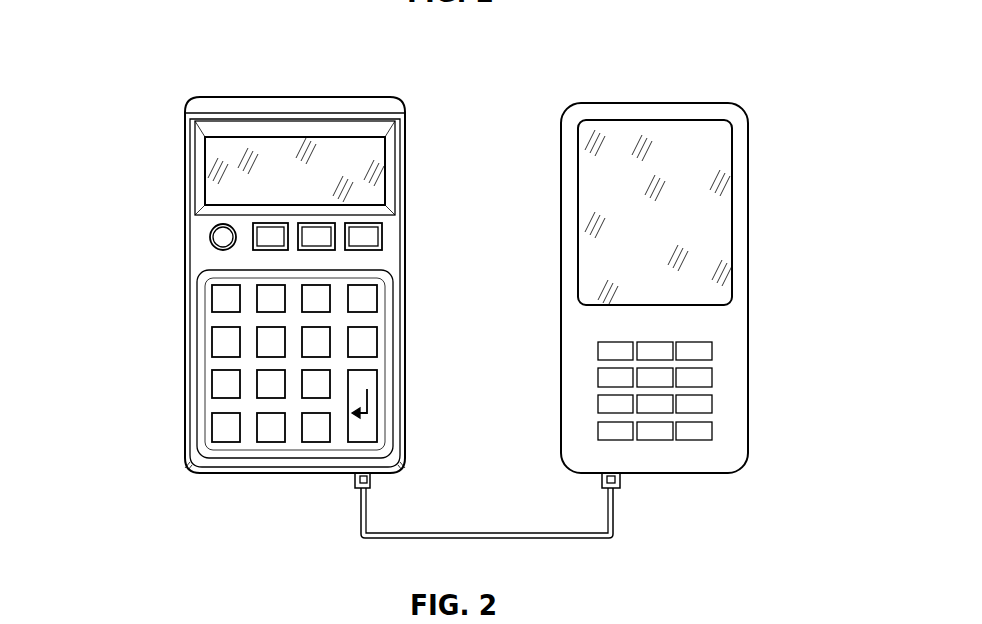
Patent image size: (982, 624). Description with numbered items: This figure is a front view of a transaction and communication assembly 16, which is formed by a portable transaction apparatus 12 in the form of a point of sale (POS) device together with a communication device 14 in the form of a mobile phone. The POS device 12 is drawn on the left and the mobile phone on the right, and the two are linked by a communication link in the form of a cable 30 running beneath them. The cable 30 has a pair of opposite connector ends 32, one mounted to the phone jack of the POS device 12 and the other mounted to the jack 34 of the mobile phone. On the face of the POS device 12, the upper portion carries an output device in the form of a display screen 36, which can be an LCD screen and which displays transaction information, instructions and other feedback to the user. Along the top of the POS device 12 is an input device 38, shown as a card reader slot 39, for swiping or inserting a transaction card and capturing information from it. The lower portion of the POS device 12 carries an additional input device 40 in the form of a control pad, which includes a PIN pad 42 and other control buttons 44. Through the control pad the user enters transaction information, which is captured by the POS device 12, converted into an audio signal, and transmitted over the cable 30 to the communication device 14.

The transaction apparatus 12 is at (275, 265).
The communication device 14 is at (750, 138).
The transaction and communication assembly 16 is at (190, 70).
The cable 30 is at (458, 532).
The connector ends 32 is at (353, 481).
The jack 34 is at (600, 475).
The display screen 36 is at (210, 152).
The input device 38 is at (357, 113).
The card reader slot 39 is at (405, 118).
The additional input device 40 is at (223, 448).
The PIN pad 42 is at (206, 366).
The control buttons 44 is at (210, 237).